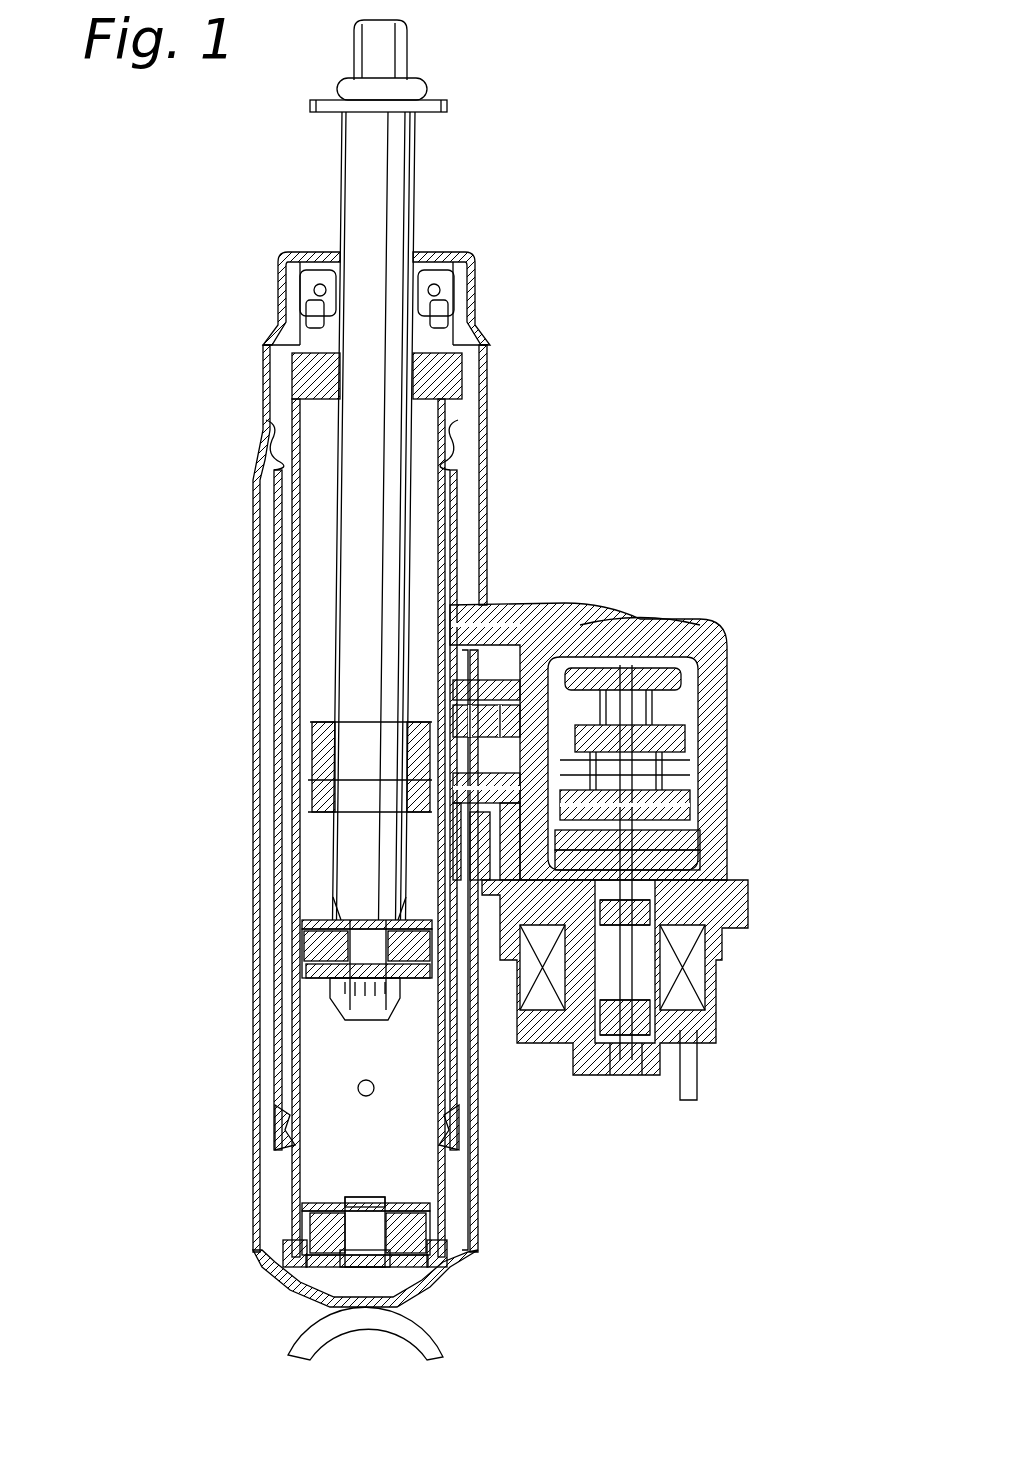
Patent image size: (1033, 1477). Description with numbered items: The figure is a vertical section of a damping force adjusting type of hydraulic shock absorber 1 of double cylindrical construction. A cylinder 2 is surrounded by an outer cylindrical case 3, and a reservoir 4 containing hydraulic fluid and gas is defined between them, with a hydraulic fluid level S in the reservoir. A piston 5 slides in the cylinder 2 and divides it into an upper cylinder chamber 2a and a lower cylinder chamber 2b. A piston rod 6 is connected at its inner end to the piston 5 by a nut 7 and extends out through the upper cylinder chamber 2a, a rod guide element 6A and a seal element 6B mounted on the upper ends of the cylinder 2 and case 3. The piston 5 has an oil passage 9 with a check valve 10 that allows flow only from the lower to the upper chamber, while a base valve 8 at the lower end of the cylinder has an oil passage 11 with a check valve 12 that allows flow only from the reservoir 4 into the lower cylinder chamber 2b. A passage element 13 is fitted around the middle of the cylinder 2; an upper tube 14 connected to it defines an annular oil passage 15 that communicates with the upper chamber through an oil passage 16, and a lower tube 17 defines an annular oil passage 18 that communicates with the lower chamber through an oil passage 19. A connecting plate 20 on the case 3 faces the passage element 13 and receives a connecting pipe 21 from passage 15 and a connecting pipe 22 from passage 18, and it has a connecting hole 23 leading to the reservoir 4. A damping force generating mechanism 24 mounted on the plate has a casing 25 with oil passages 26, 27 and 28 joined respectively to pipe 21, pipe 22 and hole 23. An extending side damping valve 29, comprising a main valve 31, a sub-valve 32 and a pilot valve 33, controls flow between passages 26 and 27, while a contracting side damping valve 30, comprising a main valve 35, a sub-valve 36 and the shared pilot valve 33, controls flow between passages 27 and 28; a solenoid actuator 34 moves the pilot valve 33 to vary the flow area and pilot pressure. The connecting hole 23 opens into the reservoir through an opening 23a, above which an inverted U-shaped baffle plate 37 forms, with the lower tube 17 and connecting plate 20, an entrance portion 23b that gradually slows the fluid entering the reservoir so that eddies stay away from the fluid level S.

The hydraulic shock absorber 1 is at (682, 224).
The cylinder 2 is at (292, 406).
The upper cylinder chamber 2a is at (318, 620).
The lower cylinder chamber 2b is at (300, 1150).
The outer cylindrical case 3 is at (262, 442).
The reservoir 4 is at (300, 482).
The piston 5 is at (332, 1000).
The piston rod 6 is at (352, 126).
The rod guide element 6A is at (283, 346).
The seal element 6B is at (300, 265).
The nut 7 is at (265, 1060).
The base valve 8 is at (283, 1265).
The oil passage 9 is at (305, 948).
The check valve 10 is at (305, 924).
The oil passage 11 is at (290, 1290).
The check valve 12 is at (300, 1222).
The passage element 13 is at (290, 700).
The upper tube 14 is at (290, 532).
The annular oil passage 15 is at (470, 478).
The oil passage 16 is at (486, 440).
The lower tube 17 is at (278, 1035).
The annular oil passage 18 is at (296, 1072).
The oil passage 19 is at (358, 1088).
The connecting plate 20 is at (520, 605).
The connecting pipe 21 is at (505, 600).
The connecting pipe 22 is at (515, 640).
The connecting hole 23 is at (496, 965).
The opening 23a is at (480, 1145).
The entrance portion 23b is at (462, 822).
The damping force generating mechanism 24 is at (727, 632).
The casing 25 is at (690, 615).
The oil passage 26 is at (545, 622).
The oil passage 27 is at (620, 622).
The oil passage 28 is at (553, 1048).
The extending side damping valve 29 is at (725, 730).
The contracting side damping valve 30 is at (730, 856).
The main valve 31 is at (727, 770).
The sub-valve 32 is at (725, 682).
The pilot valve 33 is at (727, 800).
The solenoid actuator 34 is at (720, 1000).
The main valve 35 is at (748, 905).
The sub-valve 36 is at (727, 830).
The baffle plate 37 is at (330, 792).
The hydraulic fluid level S is at (300, 582).
The annular passage A is at (483, 512).